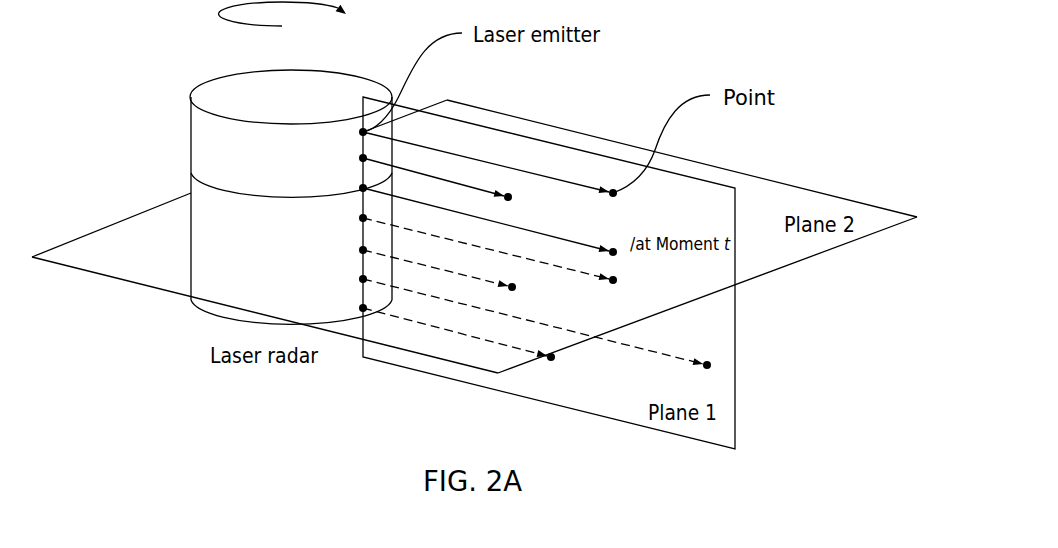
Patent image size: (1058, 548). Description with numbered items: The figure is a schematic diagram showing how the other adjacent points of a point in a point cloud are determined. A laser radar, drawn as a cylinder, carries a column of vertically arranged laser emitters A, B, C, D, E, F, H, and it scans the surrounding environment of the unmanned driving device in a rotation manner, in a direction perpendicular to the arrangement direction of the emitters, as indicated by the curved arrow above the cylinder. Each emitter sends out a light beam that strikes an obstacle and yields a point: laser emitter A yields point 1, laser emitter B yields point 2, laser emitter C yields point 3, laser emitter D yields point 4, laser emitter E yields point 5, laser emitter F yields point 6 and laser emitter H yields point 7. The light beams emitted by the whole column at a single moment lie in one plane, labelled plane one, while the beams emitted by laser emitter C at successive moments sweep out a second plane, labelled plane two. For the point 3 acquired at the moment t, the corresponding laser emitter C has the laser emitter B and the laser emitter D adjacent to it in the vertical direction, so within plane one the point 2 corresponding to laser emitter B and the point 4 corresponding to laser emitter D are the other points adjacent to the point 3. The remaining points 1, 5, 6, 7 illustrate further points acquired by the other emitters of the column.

The laser emitter A is at (356, 131).
The laser emitter B is at (356, 157).
The laser emitter C is at (356, 187).
The laser emitter D is at (355, 217).
The laser emitter E is at (357, 249).
The laser emitter F is at (357, 278).
The laser emitter H is at (355, 307).
The point 1 is at (498, 172).
The point 2 is at (445, 185).
The point 3 is at (496, 222).
The point 4 is at (497, 263).
The point 5 is at (448, 282).
The point 6 is at (543, 335).
The point 7 is at (468, 343).